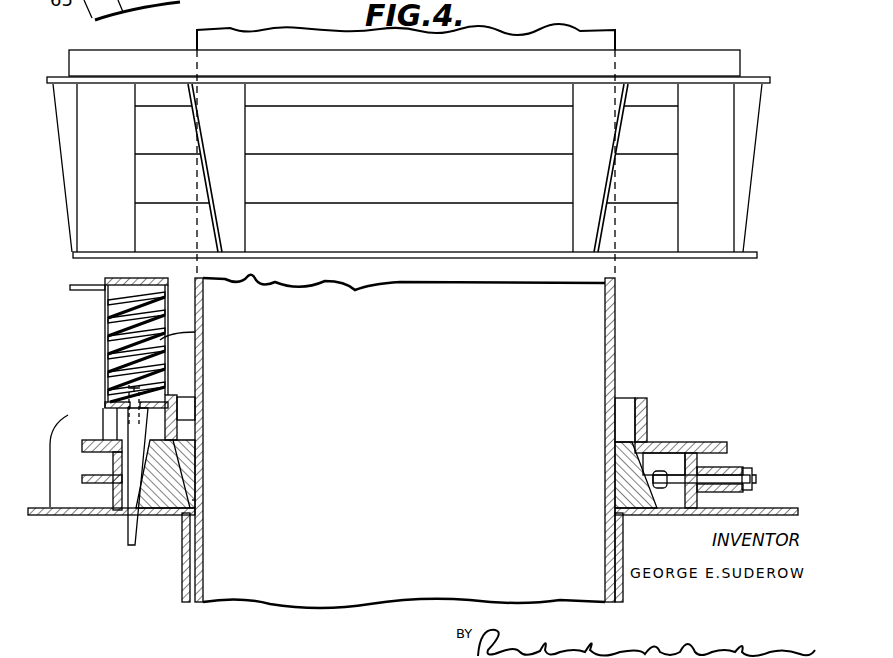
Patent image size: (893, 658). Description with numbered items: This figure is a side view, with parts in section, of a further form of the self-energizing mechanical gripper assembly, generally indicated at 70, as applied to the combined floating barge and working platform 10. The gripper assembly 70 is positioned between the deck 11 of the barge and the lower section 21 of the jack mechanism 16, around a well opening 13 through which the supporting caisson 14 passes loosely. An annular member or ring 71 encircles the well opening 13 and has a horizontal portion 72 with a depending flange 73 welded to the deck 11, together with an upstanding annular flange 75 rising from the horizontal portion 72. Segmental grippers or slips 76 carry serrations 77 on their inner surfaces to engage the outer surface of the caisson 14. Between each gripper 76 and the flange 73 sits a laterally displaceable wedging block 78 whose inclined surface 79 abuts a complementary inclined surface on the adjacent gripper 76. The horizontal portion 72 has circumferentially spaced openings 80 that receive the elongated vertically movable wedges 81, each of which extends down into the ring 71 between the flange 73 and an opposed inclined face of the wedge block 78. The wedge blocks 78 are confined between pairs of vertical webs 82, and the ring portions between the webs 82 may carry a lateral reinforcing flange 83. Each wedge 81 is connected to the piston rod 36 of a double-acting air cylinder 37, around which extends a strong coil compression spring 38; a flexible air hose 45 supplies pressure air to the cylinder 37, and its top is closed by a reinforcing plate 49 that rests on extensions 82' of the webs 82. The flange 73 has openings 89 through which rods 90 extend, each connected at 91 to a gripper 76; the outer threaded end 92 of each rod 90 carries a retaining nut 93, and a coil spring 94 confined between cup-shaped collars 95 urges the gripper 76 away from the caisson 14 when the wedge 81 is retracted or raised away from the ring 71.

The combined floating barge and working platform 10 is at (91, 526).
The deck 11 is at (110, 522).
The well opening 13 is at (185, 582).
The caisson 14 is at (616, 40).
The jack mechanism 16 is at (665, 57).
The lower section of the jack 21 is at (740, 183).
The piston rod 36 is at (140, 386).
The double-acting air cylinder 37 is at (110, 328).
The coil compression spring 38 is at (160, 318).
The flexible air hose 45 is at (70, 287).
The reinforcing plate 49 is at (150, 280).
The gripper assembly 70 is at (639, 394).
The annular member or ring 71 is at (90, 427).
The horizontal portion 72 is at (712, 442).
The depending flange 73 is at (108, 510).
The upstanding annular flange 75 is at (650, 412).
The segmental grippers or slips 76 is at (170, 516).
The serrations 77 is at (200, 482).
The wedging block 78 is at (146, 512).
The inclined surface 79 is at (195, 500).
The opening 80 is at (177, 420).
The vertically movable wedge 81 is at (115, 440).
The vertical web 82 is at (48, 445).
The extension of the vertical web 82' is at (198, 329).
The lateral reinforcing flange 83 is at (92, 483).
The opening 89 is at (670, 480).
The rod 90 is at (715, 470).
The connection 91 is at (666, 487).
The outer threaded end 92 is at (755, 481).
The retaining nut 93 is at (740, 478).
The coil spring 94 is at (716, 490).
The cup-shaped collar 95 is at (698, 470).